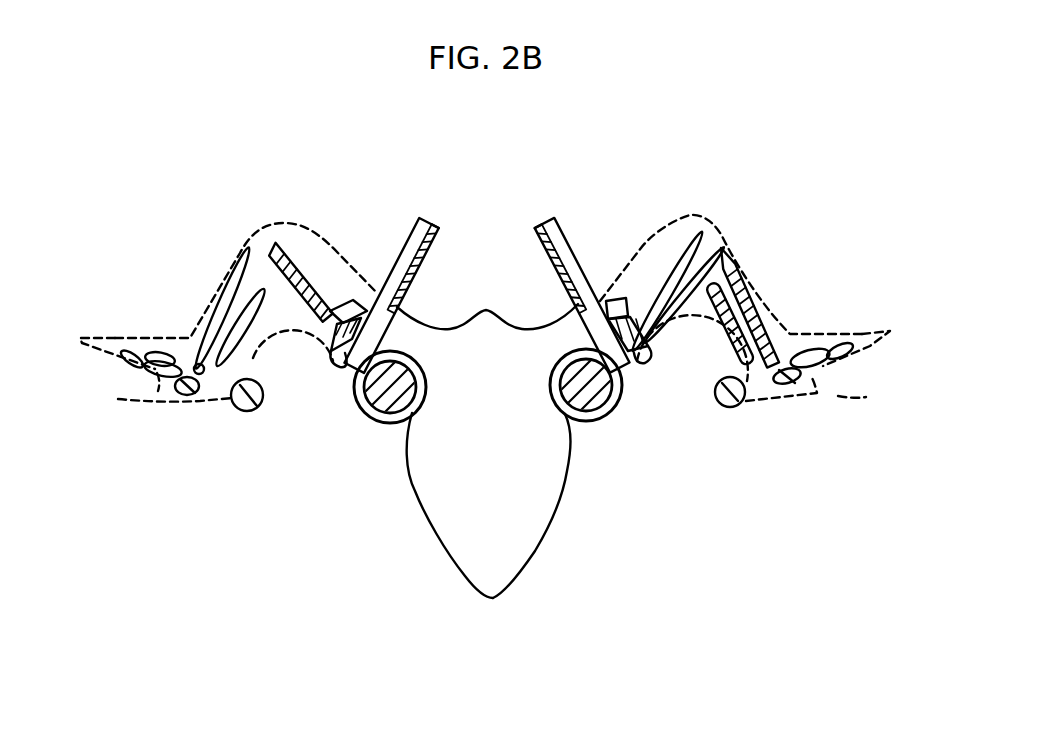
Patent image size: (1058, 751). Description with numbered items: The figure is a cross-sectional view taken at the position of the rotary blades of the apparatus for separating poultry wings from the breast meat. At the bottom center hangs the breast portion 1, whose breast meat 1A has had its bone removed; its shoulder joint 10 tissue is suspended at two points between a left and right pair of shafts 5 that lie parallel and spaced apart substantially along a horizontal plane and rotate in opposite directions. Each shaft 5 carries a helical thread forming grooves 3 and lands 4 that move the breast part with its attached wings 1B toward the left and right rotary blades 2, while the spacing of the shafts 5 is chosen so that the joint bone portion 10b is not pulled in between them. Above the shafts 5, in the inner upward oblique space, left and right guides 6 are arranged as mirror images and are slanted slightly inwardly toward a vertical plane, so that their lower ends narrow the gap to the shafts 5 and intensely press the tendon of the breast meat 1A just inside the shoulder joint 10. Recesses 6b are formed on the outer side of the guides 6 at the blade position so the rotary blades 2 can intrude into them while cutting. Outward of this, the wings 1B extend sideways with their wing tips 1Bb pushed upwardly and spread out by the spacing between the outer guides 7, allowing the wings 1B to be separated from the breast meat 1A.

The breast portion 1 is at (553, 579).
The breast meat 1A is at (538, 517).
The wings 1B is at (271, 243).
The wing tips 1Bb is at (93, 337).
The rotary blades 2 is at (388, 277).
The grooves 3 is at (407, 422).
The lands 4 is at (400, 398).
The shafts 5 is at (365, 421).
The guides 6 is at (571, 293).
The recesses 6b is at (549, 217).
The guides 7 is at (247, 410).
The shoulder joint 10 is at (344, 298).
The joint bone portion 10b is at (345, 352).